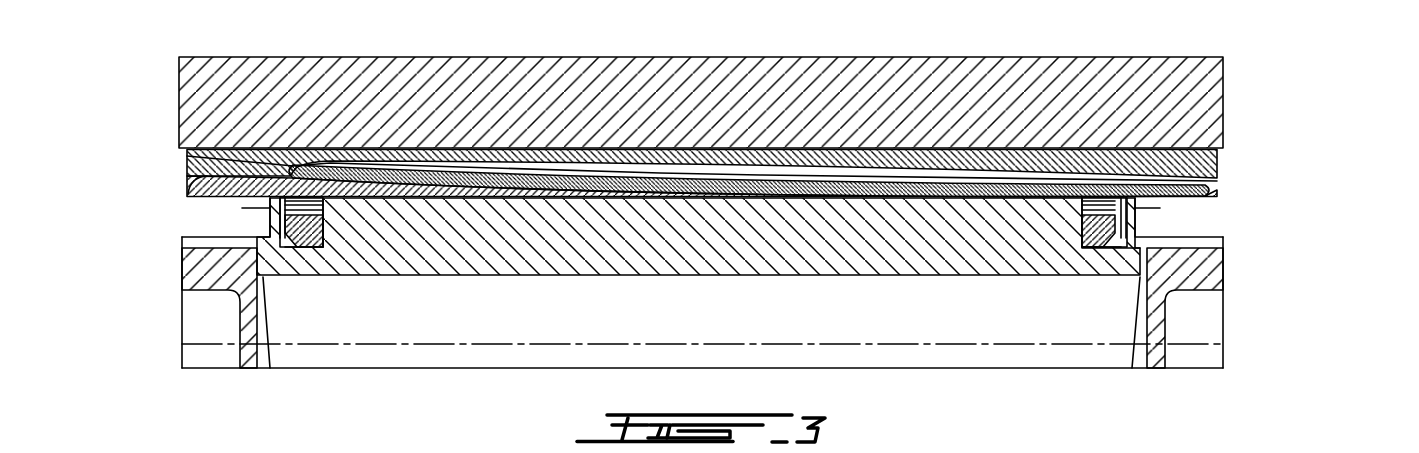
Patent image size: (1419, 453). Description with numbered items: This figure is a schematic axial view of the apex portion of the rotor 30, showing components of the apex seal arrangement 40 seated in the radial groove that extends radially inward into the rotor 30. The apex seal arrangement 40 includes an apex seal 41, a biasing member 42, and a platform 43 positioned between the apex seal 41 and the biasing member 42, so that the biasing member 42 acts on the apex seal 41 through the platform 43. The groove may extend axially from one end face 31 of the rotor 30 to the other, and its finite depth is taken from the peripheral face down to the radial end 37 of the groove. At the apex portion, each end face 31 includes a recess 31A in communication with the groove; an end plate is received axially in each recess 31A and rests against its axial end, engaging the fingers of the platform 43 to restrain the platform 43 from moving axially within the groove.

The apex seal arrangement 40 is at (728, 98).
The apex seal 41 is at (1197, 90).
The biasing member 42 is at (200, 177).
The platform 43 is at (1213, 152).
The rotor 30 is at (437, 256).
The end face 31 is at (183, 258).
The recess 31A is at (200, 207).
The radial end 37 is at (360, 207).